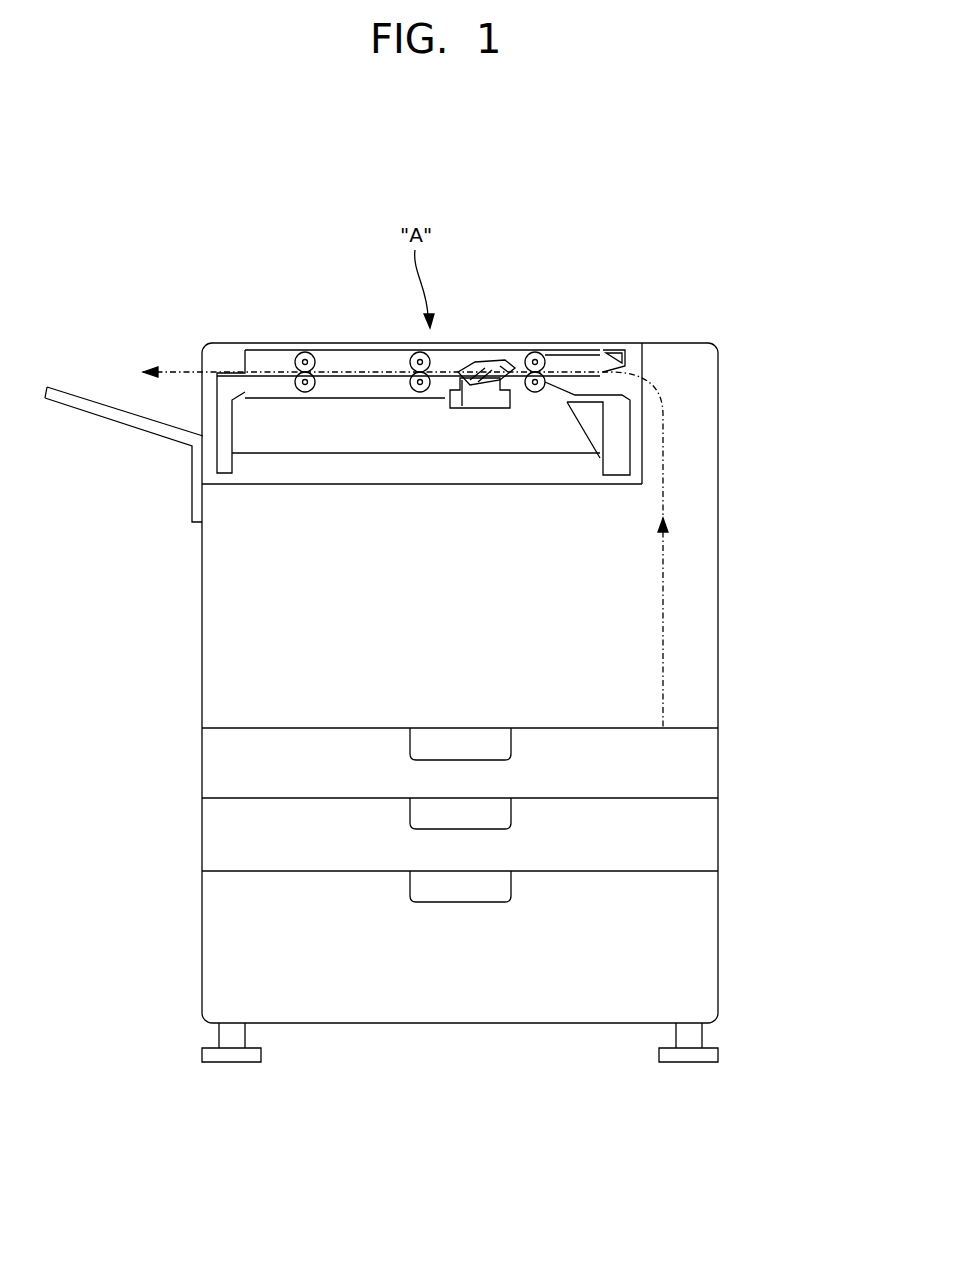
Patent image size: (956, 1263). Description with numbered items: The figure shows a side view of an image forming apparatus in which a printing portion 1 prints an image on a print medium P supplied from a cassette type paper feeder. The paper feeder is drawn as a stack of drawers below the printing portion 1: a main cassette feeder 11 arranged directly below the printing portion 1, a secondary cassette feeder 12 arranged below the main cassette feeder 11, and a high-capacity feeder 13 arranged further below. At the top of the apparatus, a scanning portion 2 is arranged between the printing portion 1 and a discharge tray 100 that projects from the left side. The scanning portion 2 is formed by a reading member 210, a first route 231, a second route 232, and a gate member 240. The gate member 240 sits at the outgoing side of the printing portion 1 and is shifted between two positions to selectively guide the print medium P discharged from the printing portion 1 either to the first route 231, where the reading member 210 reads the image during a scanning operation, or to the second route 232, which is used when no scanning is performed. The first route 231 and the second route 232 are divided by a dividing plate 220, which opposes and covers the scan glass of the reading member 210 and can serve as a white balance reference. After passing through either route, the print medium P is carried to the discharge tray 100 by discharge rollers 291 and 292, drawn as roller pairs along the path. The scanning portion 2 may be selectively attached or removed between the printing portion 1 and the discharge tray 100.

The printing portion 1 is at (748, 533).
The scanning portion 2 is at (244, 343).
The main cassette feeder 11 is at (703, 763).
The secondary cassette feeder 12 is at (703, 836).
The high-capacity feeder 13 is at (703, 948).
The discharge tray 100 is at (130, 422).
The reading member 210 is at (465, 410).
The dividing plate 220 is at (475, 352).
The first route 231 is at (512, 392).
The second route 232 is at (515, 352).
The gate member 240 is at (498, 352).
The discharge roller 291 is at (413, 350).
The discharge roller 292 is at (312, 350).
The print medium P is at (668, 476).